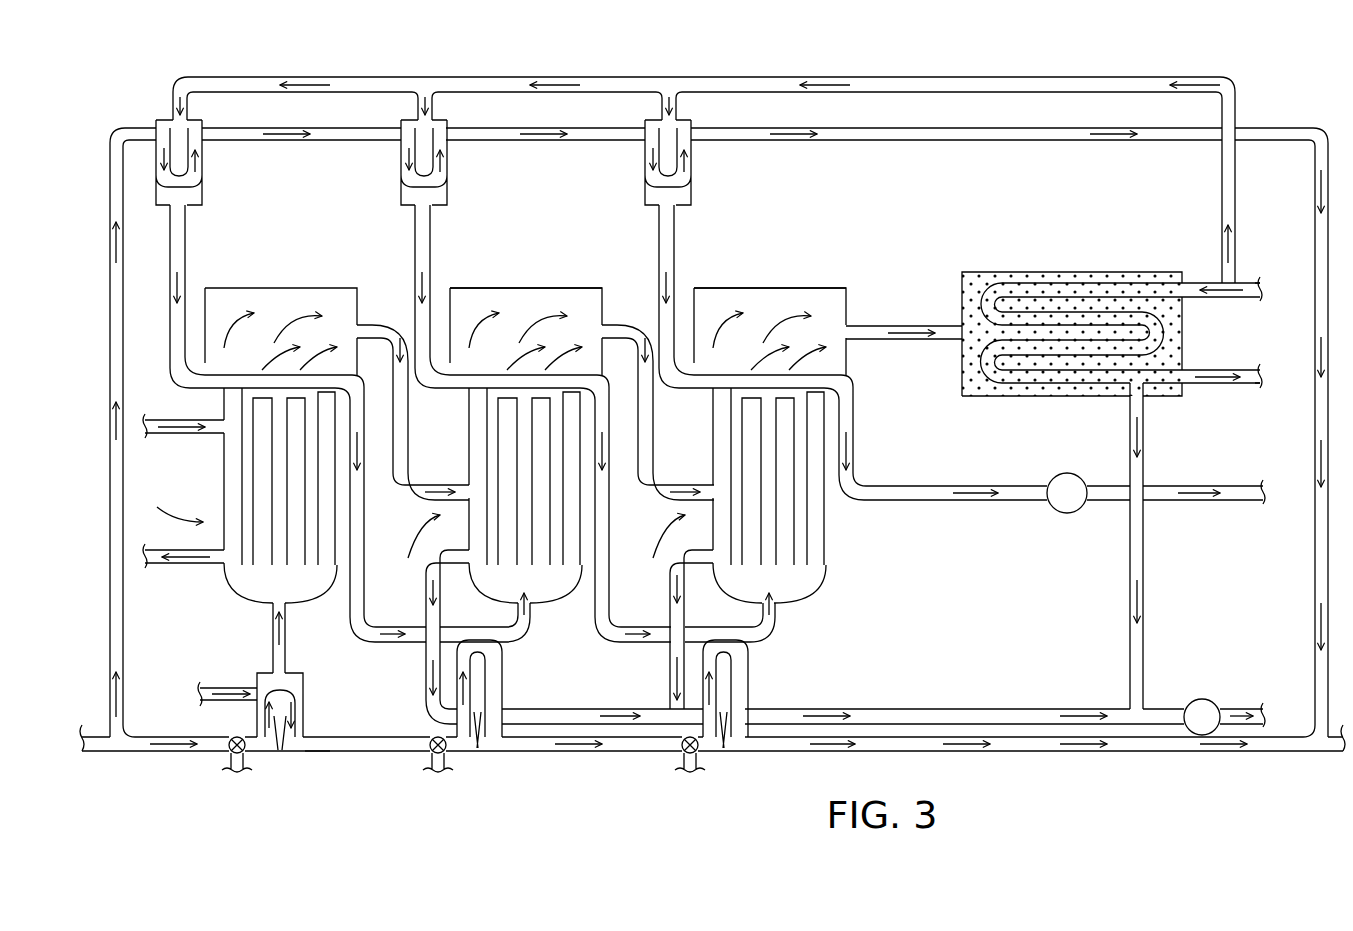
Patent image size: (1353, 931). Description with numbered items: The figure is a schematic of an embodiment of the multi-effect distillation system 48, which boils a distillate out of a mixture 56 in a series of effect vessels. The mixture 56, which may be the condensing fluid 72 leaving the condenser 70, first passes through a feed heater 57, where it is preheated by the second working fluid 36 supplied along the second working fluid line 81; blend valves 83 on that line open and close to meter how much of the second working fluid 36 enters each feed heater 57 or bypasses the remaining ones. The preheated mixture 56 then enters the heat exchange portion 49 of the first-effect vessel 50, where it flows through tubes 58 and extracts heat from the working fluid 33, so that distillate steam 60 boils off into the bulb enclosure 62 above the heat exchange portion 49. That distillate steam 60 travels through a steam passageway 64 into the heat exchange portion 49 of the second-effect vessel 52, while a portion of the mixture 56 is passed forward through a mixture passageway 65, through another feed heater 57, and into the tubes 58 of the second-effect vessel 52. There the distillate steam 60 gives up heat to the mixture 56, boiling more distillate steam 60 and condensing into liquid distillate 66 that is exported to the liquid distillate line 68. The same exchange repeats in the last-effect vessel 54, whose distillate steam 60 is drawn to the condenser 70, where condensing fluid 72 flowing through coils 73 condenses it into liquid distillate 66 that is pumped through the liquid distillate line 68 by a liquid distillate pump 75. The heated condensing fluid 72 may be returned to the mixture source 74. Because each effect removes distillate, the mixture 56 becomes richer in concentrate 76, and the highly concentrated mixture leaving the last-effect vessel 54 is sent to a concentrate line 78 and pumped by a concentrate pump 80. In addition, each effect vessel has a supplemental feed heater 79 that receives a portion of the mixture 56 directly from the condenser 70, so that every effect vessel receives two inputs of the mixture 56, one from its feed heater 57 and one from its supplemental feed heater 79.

The working fluid 33 is at (175, 420).
The second working fluid 36 is at (114, 232).
The multi-effect distillation system 48 is at (945, 200).
The heat exchange portion 49 is at (410, 532).
The first-effect vessel 50 is at (519, 302).
The second-effect vessel 52 is at (530, 288).
The last-effect vessel 54 is at (760, 288).
The mixture 56 is at (178, 108).
The feed heater 57 is at (303, 705).
The tubes 58 is at (305, 530).
The distillate steam 60 is at (380, 326).
The bulb enclosure 62 is at (222, 296).
The steam passageway 64 is at (409, 420).
The mixture passageway 65 is at (408, 645).
The liquid distillate 66 is at (447, 560).
The liquid distillate line 68 is at (555, 709).
The condenser 70 is at (1075, 272).
The condensing fluid 72 is at (1226, 292).
The coils 73 is at (1016, 285).
The mixture source 74 is at (1268, 332).
The liquid distillate pump 75 is at (1199, 699).
The concentrate 76 is at (963, 486).
The concentrate line 78 is at (925, 503).
The supplemental feed heater 79 is at (200, 121).
The concentrate pump 80 is at (1064, 513).
The second working fluid line 81 is at (318, 752).
The blend valve 83 is at (237, 737).